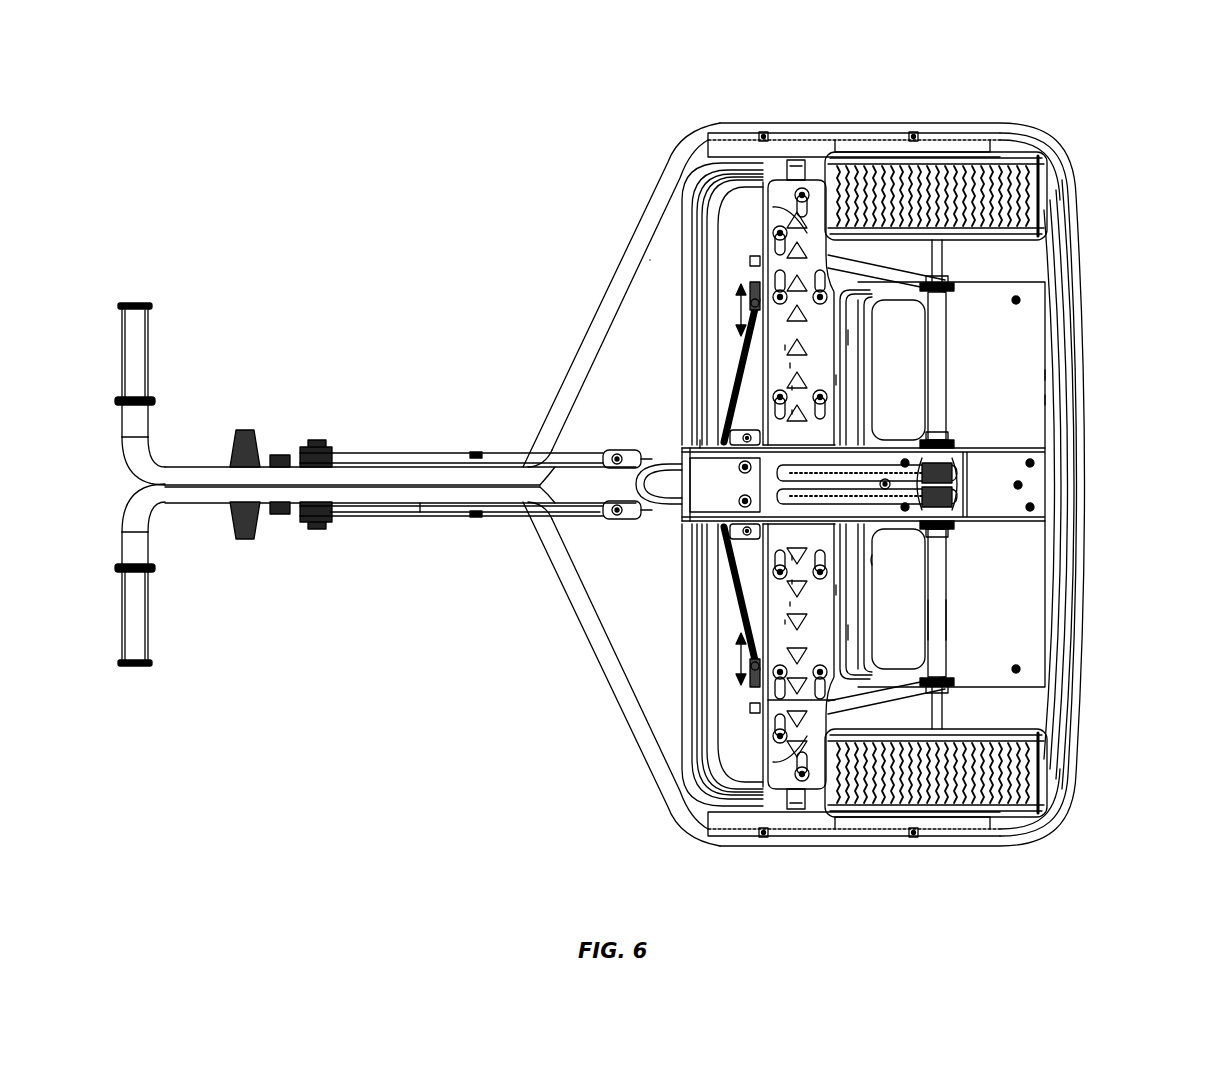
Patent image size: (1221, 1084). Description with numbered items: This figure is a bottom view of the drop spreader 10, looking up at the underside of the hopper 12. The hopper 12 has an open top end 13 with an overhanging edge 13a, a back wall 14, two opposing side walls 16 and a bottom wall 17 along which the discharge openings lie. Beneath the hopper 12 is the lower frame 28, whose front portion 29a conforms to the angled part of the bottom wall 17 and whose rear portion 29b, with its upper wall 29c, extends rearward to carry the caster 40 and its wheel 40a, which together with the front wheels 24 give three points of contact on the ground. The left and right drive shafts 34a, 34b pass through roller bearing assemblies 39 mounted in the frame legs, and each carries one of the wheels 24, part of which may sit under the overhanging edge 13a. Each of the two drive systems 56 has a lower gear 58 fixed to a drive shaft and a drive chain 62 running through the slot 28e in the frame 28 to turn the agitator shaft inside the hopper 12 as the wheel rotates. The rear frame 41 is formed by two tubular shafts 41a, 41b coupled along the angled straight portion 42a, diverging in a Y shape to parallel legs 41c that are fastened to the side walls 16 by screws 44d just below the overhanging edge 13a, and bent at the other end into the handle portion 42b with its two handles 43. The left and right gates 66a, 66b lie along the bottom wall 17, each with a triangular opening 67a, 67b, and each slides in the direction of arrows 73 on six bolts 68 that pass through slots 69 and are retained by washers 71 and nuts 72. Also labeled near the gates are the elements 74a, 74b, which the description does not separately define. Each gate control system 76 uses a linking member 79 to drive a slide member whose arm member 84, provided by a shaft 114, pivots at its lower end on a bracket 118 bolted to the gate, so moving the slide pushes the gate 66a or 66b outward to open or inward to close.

The drop spreader 10 is at (1141, 84).
The hopper 12 is at (1077, 258).
The open top end 13 is at (1086, 590).
The overhanging edge 13a is at (977, 123).
The back wall 14 is at (718, 625).
The side walls 16 is at (865, 136).
The bottom wall 17 is at (718, 738).
The wheels 24 is at (1045, 160).
The lower frame 28 is at (1045, 375).
The slot 28e is at (866, 412).
The front portion 29a is at (1045, 400).
The rear portion 29b is at (700, 440).
The upper wall 29c is at (866, 556).
The left drive shaft 34a is at (946, 368).
The right drive shaft 34b is at (946, 600).
The roller bearing assembly 39 is at (946, 282).
The caster 40 is at (690, 512).
The wheel 40a is at (636, 484).
The rear frame 41 is at (425, 503).
The tubular shaft 41a is at (347, 453).
The tubular shaft 41b is at (347, 517).
The legs 41c is at (810, 140).
The angled straight portion 42a is at (393, 467).
The handle portion 42b is at (150, 455).
The handles 43 is at (148, 345).
The screws 44d is at (764, 132).
The drive systems 56 is at (936, 440).
The lower gear 58 is at (960, 478).
The drive chain 62 is at (880, 480).
The left gate 66a is at (848, 340).
The right gate 66b is at (848, 630).
The opening 67a is at (768, 268).
The opening 67b is at (768, 701).
The bolts 68 is at (790, 363).
The slots 69 is at (792, 410).
The washers 71 is at (785, 345).
The nuts 72 is at (792, 386).
The arrows 73 is at (736, 305).
The first mounting plate 74a is at (840, 380).
The second mounting plate 74b is at (840, 590).
The gate control system 76 is at (245, 430).
The linking member 79 is at (610, 450).
The arm member 84 is at (752, 330).
The shaft 114 is at (758, 312).
The bracket 118 is at (750, 260).